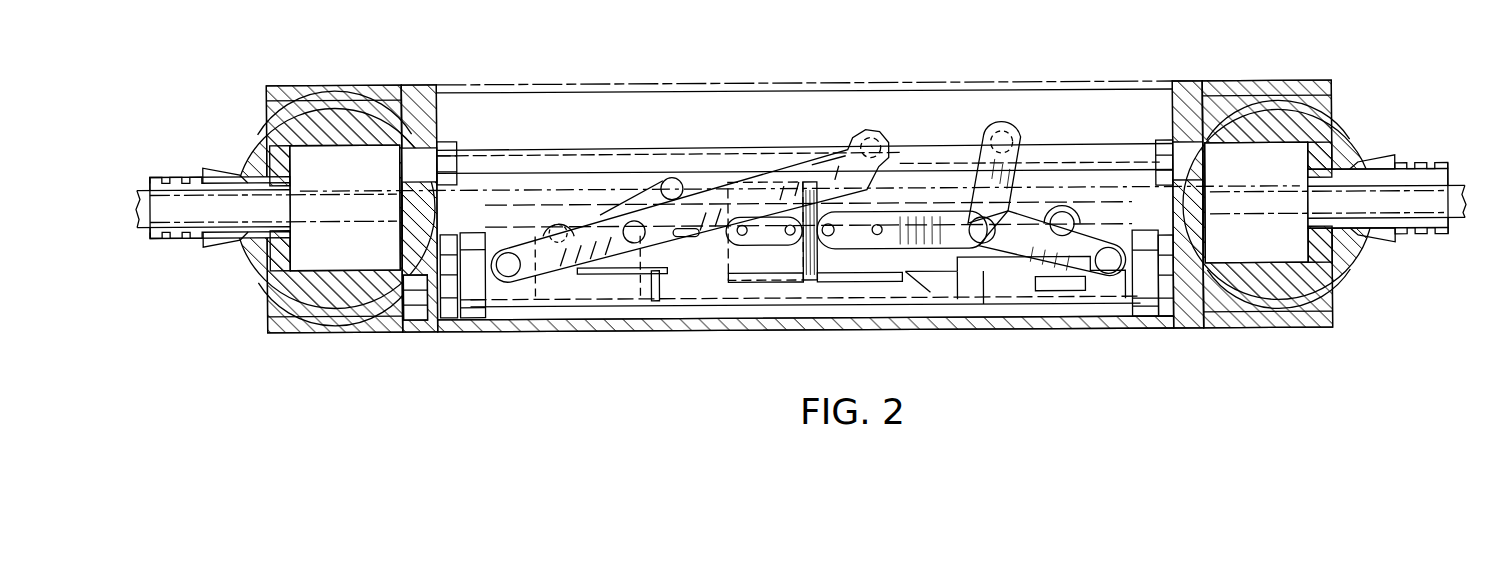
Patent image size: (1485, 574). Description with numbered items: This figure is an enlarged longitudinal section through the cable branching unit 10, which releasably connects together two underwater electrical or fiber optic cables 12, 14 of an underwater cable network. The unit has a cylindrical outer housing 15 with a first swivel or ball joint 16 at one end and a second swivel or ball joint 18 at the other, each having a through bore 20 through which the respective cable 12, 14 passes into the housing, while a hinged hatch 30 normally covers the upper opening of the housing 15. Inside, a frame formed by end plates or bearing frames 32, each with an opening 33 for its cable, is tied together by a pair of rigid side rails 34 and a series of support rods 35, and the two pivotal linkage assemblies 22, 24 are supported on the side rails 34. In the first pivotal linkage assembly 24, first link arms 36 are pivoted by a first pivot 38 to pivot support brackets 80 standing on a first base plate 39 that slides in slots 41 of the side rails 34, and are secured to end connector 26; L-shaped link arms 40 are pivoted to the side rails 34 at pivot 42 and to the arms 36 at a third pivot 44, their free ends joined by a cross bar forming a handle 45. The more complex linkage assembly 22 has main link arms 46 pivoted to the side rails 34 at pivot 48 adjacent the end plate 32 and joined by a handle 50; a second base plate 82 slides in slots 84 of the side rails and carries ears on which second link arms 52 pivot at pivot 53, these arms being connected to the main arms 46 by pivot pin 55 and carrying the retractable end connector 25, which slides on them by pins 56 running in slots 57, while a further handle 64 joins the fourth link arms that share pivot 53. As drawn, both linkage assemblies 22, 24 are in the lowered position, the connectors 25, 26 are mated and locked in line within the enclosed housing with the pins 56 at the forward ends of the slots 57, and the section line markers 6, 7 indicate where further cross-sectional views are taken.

The section line 6- 6 is at (520, 26).
The section line 7- 7 is at (546, 26).
The cable branching unit 10 is at (1027, 82).
The cable 12 is at (562, 190).
The cable 14 is at (1143, 189).
The cylindrical outer housing 15 is at (917, 326).
The first swivel or ball joint 16 is at (262, 148).
The second swivel or ball joint 18 is at (1345, 266).
The through bore 20 is at (260, 182).
The pivotal linkage assembly 22 is at (708, 190).
The first pivotal linkage assembly 24 is at (990, 124).
The end connector 25 is at (738, 280).
The end connector 26 is at (842, 282).
The hinged hatch 30 is at (868, 82).
The end plate or bearing frame 32 is at (420, 122).
The opening 33 is at (427, 268).
The side rail 34 is at (957, 272).
The support rod 35 is at (648, 153).
The first link arm 36 is at (917, 222).
The first pivot 38 is at (1063, 213).
The first base plate 39 is at (1045, 283).
The L-shaped link arm 40 is at (1015, 242).
The slot 41 is at (947, 300).
The pivot 42 is at (1110, 270).
The third pivot 44 is at (987, 222).
The handle 45 is at (1015, 133).
The first or main link arm 46 is at (820, 173).
The pivot 48 is at (508, 275).
The cross bar or handle 50 is at (855, 133).
The second link arm 52 is at (688, 248).
The pivot 53 is at (563, 223).
The pivot pin 55 is at (640, 243).
The pin 56 is at (791, 225).
The slot 57 is at (747, 282).
The handle 64 is at (674, 177).
The pivot support bracket or ear 80 is at (1078, 220).
The second base plate 82 is at (605, 272).
The slot 84 is at (655, 300).